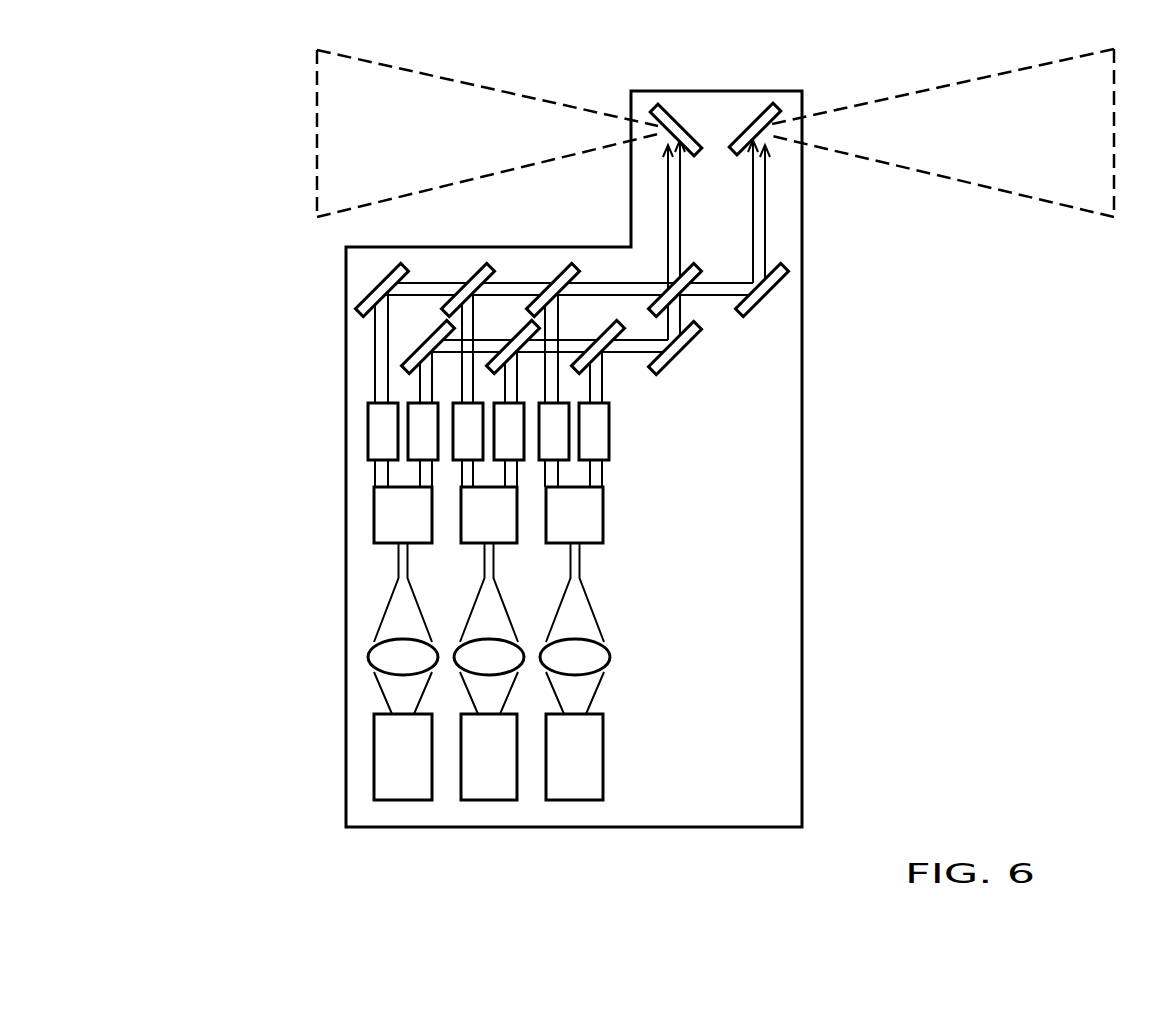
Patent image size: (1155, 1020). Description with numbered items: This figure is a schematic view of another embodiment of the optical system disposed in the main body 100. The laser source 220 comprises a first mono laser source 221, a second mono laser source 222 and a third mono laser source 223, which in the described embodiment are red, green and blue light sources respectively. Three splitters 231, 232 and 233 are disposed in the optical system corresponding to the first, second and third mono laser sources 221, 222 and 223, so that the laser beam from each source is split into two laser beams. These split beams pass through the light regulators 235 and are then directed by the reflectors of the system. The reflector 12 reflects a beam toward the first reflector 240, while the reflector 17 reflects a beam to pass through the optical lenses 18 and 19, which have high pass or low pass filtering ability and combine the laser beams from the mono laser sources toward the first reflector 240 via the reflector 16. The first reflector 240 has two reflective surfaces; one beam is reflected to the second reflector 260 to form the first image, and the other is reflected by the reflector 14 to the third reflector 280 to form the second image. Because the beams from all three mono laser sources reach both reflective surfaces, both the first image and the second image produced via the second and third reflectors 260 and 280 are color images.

The main body 100 is at (803, 555).
The reflector 12 is at (377, 282).
The reflector 14 is at (782, 290).
The reflector 16 is at (683, 360).
The reflector 17 is at (440, 325).
The optical lens 18 is at (525, 325).
The optical lens 19 is at (610, 325).
The first reflector 240 is at (684, 300).
The second reflector 260 is at (680, 112).
The third reflector 280 is at (748, 115).
The light regulators 235 is at (452, 435).
The splitter 231 is at (374, 500).
The splitter 232 is at (461, 528).
The splitter 233 is at (603, 512).
The first mono laser source 221 is at (403, 787).
The second mono laser source 222 is at (489, 787).
The third mono laser source 223 is at (575, 787).
The laser source 220 is at (575, 875).